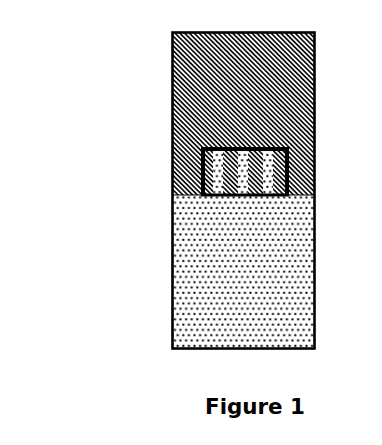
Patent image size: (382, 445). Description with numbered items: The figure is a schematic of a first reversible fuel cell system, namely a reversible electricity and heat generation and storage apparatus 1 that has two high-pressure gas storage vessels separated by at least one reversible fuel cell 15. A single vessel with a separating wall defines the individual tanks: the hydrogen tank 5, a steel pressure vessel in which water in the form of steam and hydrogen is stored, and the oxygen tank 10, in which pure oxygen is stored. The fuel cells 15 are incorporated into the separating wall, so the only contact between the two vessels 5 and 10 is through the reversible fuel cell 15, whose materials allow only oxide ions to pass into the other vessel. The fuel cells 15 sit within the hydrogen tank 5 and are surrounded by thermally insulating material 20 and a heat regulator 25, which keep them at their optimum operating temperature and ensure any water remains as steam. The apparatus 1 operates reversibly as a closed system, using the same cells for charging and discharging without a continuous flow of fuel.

The reversible electricity and heat generation and storage apparatus 1 is at (72, 152).
The hydrogen tank 5 is at (167, 93).
The oxygen tank 10 is at (165, 307).
The reversible fuel cell 15 is at (238, 188).
The thermally insulating material 20 is at (290, 197).
The heat regulator 25 is at (286, 144).